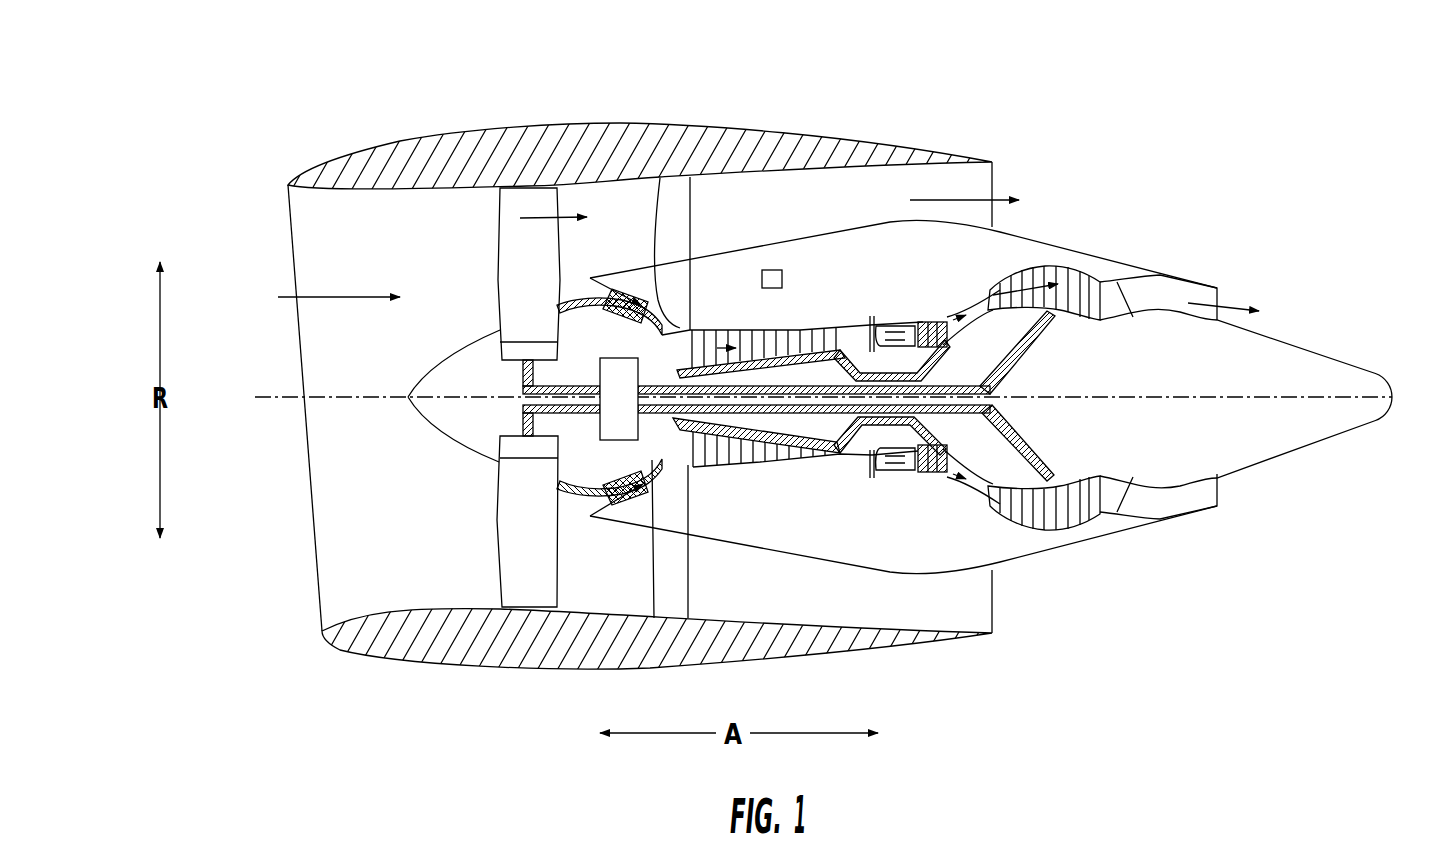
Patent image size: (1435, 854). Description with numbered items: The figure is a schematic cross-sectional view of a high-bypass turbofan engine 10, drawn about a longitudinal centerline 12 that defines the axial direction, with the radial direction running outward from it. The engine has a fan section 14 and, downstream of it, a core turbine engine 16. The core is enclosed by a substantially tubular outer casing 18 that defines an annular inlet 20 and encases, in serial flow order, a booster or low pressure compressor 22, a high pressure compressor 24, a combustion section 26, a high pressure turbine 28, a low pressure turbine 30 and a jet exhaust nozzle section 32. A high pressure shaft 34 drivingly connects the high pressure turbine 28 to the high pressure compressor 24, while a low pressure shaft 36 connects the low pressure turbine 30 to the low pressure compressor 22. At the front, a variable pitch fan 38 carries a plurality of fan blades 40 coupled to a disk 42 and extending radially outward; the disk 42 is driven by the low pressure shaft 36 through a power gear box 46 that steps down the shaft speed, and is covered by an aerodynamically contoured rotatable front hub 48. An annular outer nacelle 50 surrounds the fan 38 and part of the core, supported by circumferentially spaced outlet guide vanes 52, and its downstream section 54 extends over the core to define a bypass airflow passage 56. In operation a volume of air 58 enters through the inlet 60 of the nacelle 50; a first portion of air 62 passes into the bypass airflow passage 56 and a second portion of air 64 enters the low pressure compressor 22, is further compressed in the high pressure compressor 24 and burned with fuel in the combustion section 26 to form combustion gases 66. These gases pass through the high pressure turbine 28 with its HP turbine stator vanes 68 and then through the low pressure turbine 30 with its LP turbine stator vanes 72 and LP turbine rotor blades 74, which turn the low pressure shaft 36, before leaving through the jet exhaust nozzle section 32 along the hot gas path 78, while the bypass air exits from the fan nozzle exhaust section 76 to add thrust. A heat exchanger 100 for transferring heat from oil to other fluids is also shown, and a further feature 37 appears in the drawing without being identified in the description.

The turbofan engine 10 is at (1140, 136).
The longitudinal centerline 12 is at (1157, 398).
The fan section 14 is at (538, 88).
The core turbine engine 16 is at (806, 272).
The outer casing 18 is at (847, 562).
The annular inlet 20 is at (600, 499).
The low pressure compressor 22 is at (653, 465).
The high pressure compressor 24 is at (720, 460).
The combustion section 26 is at (891, 470).
The high pressure turbine 28 is at (1010, 463).
The low pressure turbine 30 is at (1076, 532).
The jet exhaust nozzle section 32 is at (1136, 514).
The high pressure shaft 34 is at (892, 370).
The low pressure shaft 36 is at (982, 378).
The core inlet 37 is at (676, 467).
The variable pitch fan 38 is at (458, 454).
The fan blades 40 is at (497, 547).
The disk 42 is at (523, 352).
The power gear box 46 is at (636, 368).
The front hub 48 is at (427, 412).
The outer nacelle 50 is at (545, 672).
The outlet guide vanes 52 is at (690, 208).
The downstream section 54 is at (918, 145).
The bypass airflow passage 56 is at (851, 211).
The volume of air 58 is at (340, 295).
The inlet 60 is at (322, 613).
The first portion of air 62 is at (520, 218).
The second portion of air 64 is at (586, 288).
The combustion gases 66 is at (932, 322).
The HP turbine stator vanes 68 is at (908, 472).
The LP turbine stator vanes 72 is at (1008, 503).
The LP turbine rotor blades 74 is at (660, 178).
The fan nozzle exhaust section 76 is at (982, 185).
The hot gas path 78 is at (987, 292).
The heat exchanger 100 is at (770, 268).